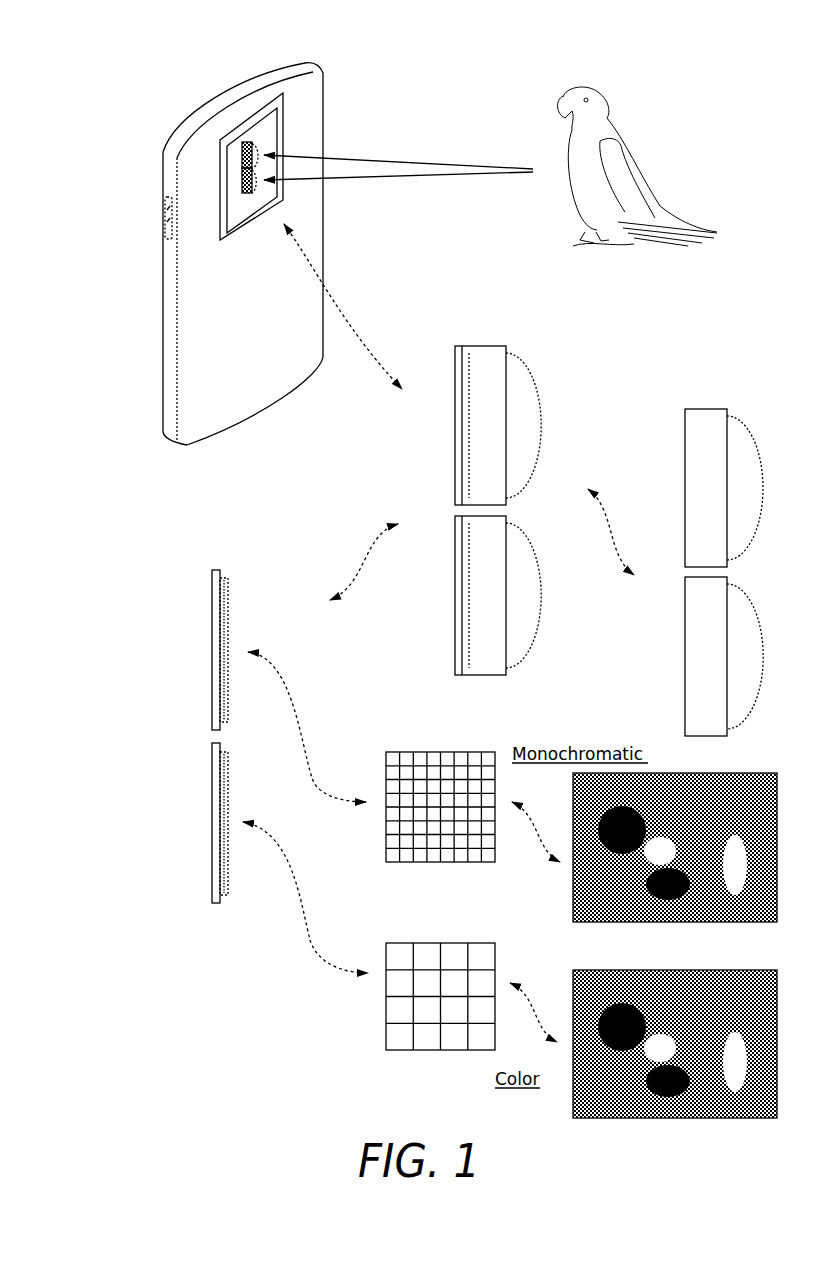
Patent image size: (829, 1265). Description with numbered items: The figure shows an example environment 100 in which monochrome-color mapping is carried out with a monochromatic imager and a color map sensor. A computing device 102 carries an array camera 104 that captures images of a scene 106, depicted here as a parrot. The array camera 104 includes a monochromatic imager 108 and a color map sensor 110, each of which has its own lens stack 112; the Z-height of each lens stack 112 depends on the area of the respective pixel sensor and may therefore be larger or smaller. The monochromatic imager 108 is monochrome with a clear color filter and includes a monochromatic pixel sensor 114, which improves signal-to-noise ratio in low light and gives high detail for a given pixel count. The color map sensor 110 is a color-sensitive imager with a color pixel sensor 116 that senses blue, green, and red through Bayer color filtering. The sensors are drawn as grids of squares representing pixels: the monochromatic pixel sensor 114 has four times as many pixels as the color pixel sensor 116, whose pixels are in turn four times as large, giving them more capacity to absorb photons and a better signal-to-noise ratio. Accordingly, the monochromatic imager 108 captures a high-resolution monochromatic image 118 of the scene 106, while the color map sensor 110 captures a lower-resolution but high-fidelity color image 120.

The example environment 100 is at (121, 36).
The computing device 102 is at (308, 64).
The array camera 104 is at (227, 139).
The scene 106 is at (660, 91).
The monochromatic imager 108 is at (438, 348).
The color map sensor 110 is at (438, 502).
The lens stack 112 is at (642, 391).
The monochromatic pixel sensor 114 is at (217, 645).
The color pixel sensor 116 is at (217, 818).
The monochromatic image 118 is at (688, 944).
The color image 120 is at (688, 1139).